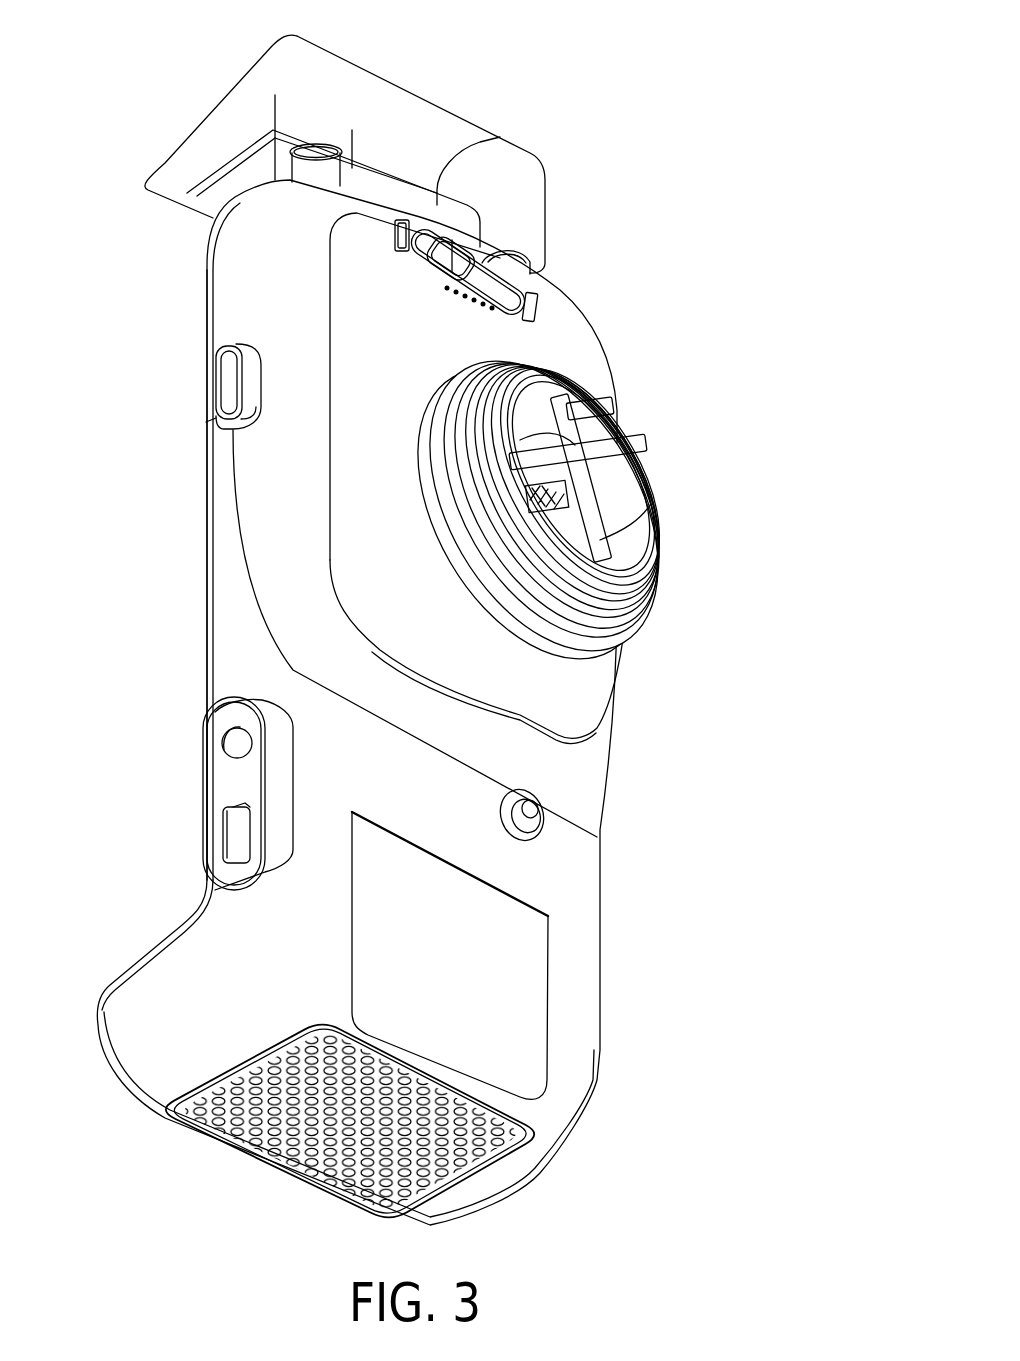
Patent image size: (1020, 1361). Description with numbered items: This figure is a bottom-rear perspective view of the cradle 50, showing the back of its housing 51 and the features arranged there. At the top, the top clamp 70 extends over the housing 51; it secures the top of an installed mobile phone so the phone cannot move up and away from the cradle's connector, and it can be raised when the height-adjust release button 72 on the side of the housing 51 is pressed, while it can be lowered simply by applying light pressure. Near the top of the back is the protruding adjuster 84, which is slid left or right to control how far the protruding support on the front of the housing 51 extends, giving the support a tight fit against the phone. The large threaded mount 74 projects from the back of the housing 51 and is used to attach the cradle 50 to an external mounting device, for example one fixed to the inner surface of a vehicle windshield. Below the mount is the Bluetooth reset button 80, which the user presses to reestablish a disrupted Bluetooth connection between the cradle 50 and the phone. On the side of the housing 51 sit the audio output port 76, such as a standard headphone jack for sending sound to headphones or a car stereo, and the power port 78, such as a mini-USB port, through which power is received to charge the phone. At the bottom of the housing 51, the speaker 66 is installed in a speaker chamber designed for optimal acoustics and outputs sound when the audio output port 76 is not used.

The cradle 50 is at (678, 72).
The housing 51 is at (227, 607).
The speaker 66 is at (490, 1133).
The top clamp 70 is at (232, 127).
The height-adjust release button 72 is at (229, 382).
The threaded mount 74 is at (553, 593).
The audio output port 76 is at (230, 752).
The power port 78 is at (222, 842).
The Bluetooth reset button 80 is at (532, 812).
The protruding adjuster 84 is at (440, 247).